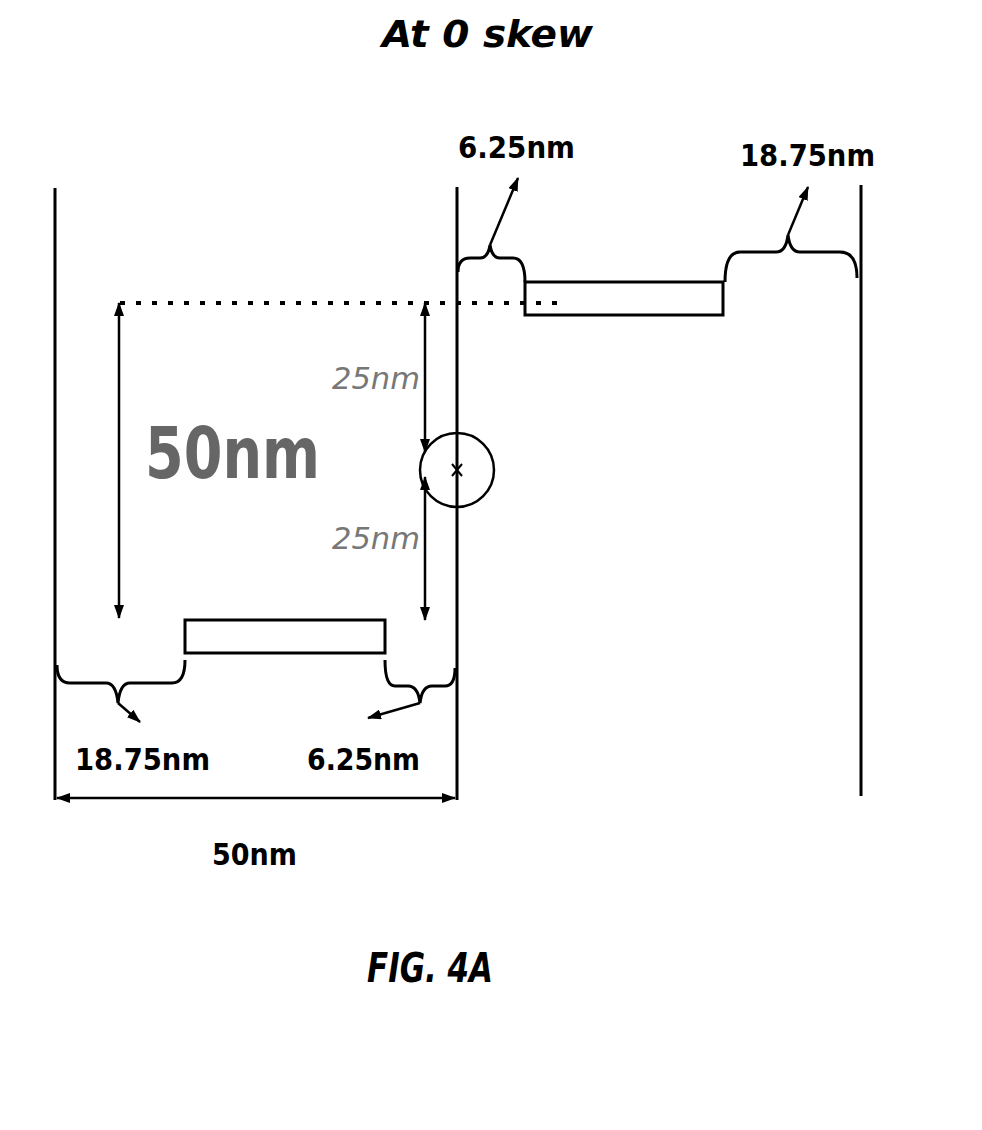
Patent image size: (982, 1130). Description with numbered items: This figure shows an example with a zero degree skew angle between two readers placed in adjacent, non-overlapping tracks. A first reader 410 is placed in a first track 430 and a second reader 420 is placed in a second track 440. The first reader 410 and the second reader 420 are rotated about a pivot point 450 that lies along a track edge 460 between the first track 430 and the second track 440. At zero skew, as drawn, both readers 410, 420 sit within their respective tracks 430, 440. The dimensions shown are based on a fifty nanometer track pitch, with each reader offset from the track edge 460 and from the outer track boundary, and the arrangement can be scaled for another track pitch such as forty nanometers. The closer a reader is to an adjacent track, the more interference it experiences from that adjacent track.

The first reader 410 is at (209, 618).
The second reader 420 is at (685, 318).
The first track 430 is at (236, 140).
The second track 440 is at (653, 768).
The pivot point 450 is at (458, 462).
The track edge 460 is at (455, 590).